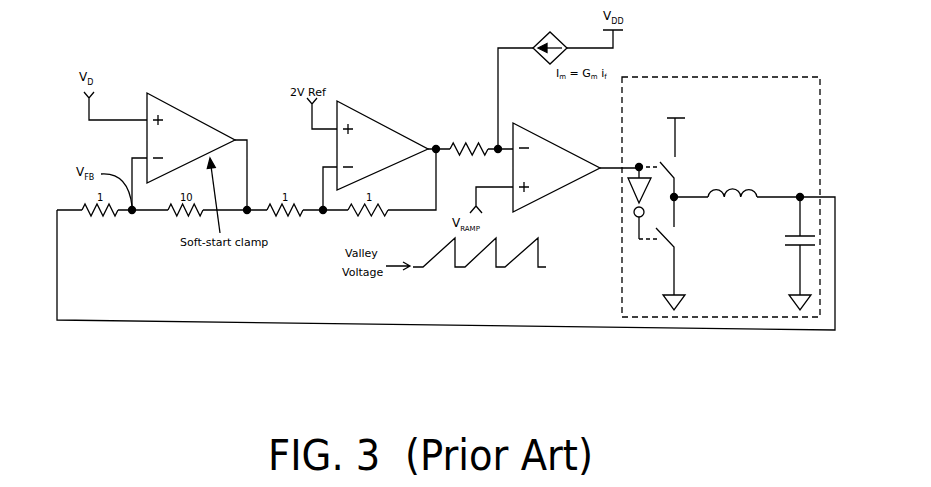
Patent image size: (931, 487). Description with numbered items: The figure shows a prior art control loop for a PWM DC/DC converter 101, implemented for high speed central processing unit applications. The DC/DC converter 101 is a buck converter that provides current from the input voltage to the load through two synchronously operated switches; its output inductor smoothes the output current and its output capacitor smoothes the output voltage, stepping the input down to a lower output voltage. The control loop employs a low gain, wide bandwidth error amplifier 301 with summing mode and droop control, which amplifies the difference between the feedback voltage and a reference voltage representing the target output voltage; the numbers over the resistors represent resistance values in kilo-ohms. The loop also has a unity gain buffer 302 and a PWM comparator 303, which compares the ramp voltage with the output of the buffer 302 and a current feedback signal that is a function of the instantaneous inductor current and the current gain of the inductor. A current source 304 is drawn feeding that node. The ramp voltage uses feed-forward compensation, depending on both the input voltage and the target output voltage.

The error amplifier 301 is at (183, 111).
The unity gain buffer 302 is at (382, 124).
The PWM comparator 303 is at (552, 142).
The current source 304 is at (545, 37).
The DC/DC converter 101 is at (753, 77).